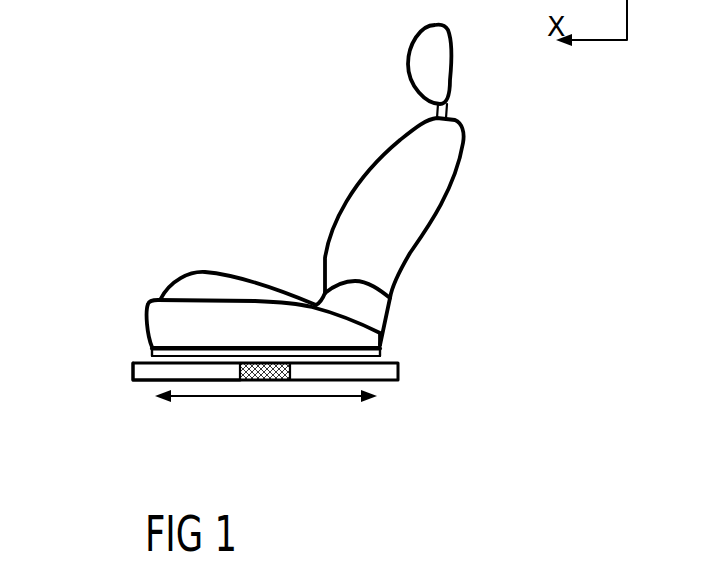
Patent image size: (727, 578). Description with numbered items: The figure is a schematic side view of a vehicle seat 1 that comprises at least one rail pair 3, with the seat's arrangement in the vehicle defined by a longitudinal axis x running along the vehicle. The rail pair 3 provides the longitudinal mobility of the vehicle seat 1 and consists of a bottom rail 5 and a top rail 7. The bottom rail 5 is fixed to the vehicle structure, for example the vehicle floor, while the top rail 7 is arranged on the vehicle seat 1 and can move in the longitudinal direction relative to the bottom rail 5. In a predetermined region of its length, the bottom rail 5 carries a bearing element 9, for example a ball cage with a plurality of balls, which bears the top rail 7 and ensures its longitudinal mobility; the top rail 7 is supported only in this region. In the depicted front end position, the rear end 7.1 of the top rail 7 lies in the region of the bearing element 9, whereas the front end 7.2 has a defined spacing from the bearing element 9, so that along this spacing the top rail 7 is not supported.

The vehicle seat 1 is at (254, 99).
The rail pair 3 is at (436, 359).
The bottom rail 5 is at (137, 376).
The top rail 7 is at (330, 347).
The rear end of the top rail 7.1 is at (395, 348).
The front end of the top rail 7.2 is at (142, 348).
The bearing element 9 is at (268, 372).